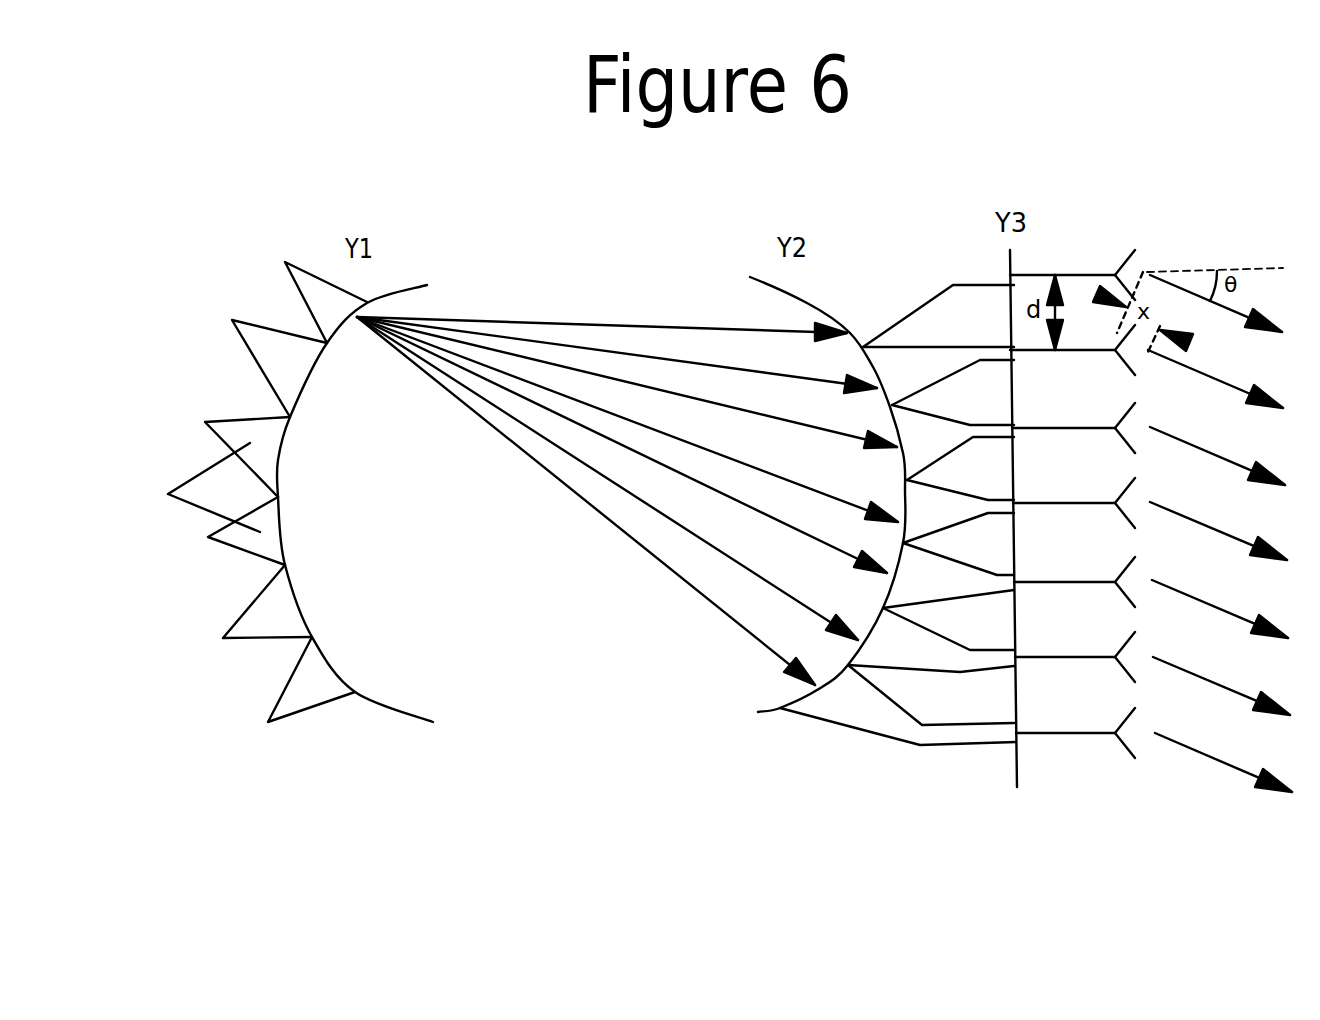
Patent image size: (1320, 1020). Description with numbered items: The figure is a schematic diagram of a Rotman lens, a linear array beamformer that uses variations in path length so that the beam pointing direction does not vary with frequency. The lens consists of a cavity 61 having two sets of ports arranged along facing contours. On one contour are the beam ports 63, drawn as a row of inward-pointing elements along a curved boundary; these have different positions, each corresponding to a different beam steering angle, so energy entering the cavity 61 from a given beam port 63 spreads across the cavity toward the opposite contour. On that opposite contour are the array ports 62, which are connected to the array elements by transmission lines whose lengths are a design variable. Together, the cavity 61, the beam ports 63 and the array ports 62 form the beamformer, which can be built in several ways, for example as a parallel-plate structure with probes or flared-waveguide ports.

The cavity 61 is at (575, 605).
The array ports 62 is at (942, 580).
The beam ports 63 is at (327, 797).